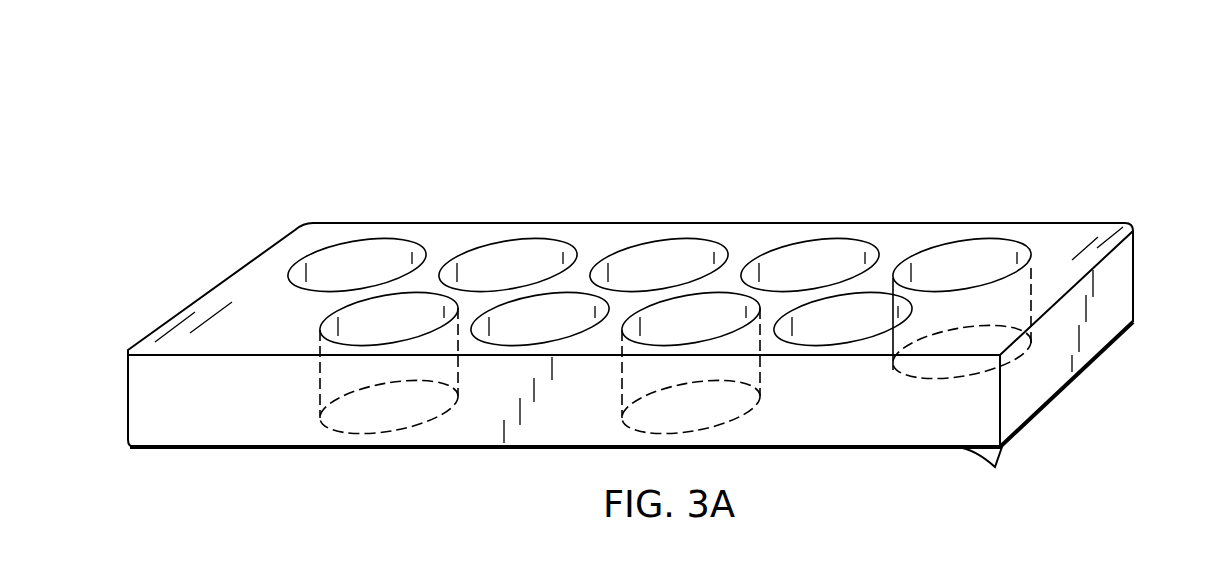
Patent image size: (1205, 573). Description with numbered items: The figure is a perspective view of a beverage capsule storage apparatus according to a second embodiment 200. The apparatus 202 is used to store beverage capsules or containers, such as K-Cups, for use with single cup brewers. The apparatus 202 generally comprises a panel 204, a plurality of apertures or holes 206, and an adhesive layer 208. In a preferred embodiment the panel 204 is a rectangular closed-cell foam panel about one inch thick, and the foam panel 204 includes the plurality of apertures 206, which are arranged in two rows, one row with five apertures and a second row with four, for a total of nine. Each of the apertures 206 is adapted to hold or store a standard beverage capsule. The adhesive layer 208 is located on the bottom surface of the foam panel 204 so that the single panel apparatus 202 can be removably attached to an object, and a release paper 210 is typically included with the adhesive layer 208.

The embodiment 200 is at (286, 116).
The apparatus 202 is at (489, 203).
The panel 204 is at (248, 318).
The apertures 206 is at (859, 333).
The adhesive layer 208 is at (1001, 446).
The release paper 210 is at (982, 465).